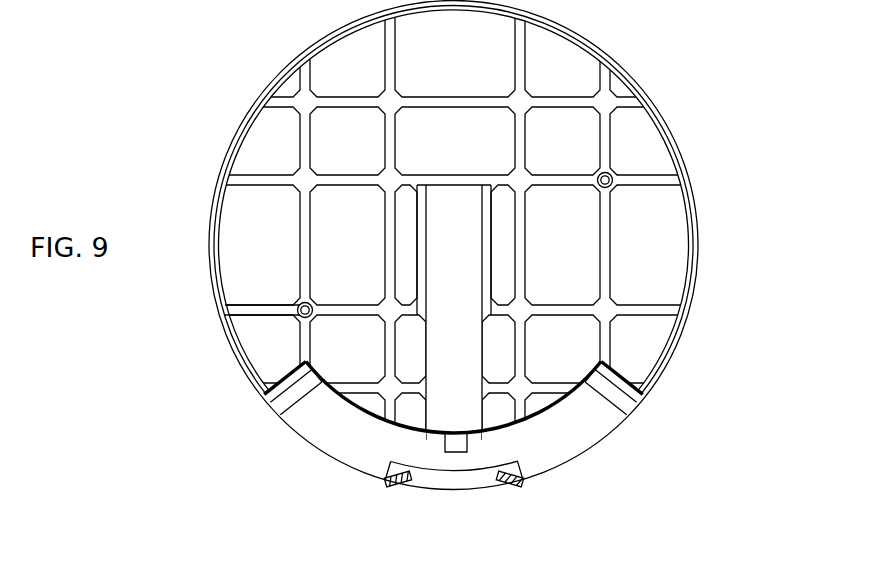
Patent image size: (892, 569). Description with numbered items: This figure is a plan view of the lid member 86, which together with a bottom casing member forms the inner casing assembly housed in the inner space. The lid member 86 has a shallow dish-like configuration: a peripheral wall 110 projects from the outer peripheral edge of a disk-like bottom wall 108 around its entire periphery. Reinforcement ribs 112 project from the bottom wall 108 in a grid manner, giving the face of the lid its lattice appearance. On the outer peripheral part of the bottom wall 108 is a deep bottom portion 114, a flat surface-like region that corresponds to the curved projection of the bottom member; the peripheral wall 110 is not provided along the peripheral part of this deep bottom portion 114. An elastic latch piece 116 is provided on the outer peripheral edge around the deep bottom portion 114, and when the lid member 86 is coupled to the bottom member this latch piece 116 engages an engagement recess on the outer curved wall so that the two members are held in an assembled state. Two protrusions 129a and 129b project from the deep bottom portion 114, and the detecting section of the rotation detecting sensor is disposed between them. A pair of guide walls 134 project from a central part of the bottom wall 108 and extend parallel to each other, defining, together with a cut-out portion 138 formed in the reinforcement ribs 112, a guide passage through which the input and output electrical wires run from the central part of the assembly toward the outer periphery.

The lid member 86 is at (606, 48).
The bottom wall 108 is at (345, 65).
The peripheral wall 110 is at (696, 222).
The reinforcement ribs 112 is at (243, 310).
The deep bottom portion 114 is at (590, 433).
The elastic latch piece 116 is at (388, 483).
The protrusion 129a is at (478, 480).
The protrusion 129b is at (447, 441).
The guide walls 134 is at (421, 227).
The cut-out portion 138 is at (432, 386).